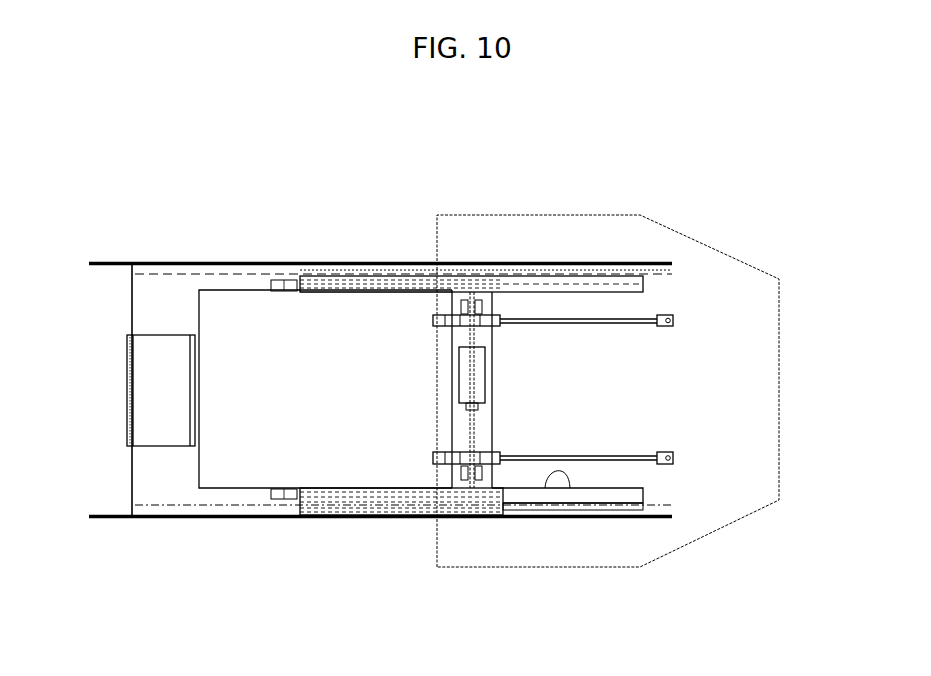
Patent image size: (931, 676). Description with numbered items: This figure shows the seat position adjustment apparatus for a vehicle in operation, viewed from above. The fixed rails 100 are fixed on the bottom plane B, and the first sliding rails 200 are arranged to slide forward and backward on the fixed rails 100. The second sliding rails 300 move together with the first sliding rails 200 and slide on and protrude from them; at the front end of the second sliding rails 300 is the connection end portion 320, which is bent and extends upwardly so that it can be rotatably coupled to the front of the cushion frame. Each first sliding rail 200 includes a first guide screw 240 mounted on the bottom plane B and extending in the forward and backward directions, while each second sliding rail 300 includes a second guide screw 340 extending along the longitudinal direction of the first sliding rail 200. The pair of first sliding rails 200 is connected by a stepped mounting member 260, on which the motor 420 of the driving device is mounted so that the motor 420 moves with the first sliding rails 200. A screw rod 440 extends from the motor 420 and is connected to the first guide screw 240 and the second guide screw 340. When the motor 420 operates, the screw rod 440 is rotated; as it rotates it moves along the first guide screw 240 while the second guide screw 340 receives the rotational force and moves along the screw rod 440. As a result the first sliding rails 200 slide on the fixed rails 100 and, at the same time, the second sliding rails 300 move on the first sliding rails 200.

The fixed rail 100 is at (657, 508).
The first sliding rail 200 is at (547, 490).
The first guide screw 240 is at (630, 455).
The stepped mounting member 260 is at (488, 303).
The second sliding rail 300 is at (166, 492).
The connection end portion 320 is at (140, 394).
The second guide screw 340 is at (342, 498).
The motor 420 is at (492, 390).
The screw rod 440 is at (475, 431).
The bottom plane B is at (695, 256).